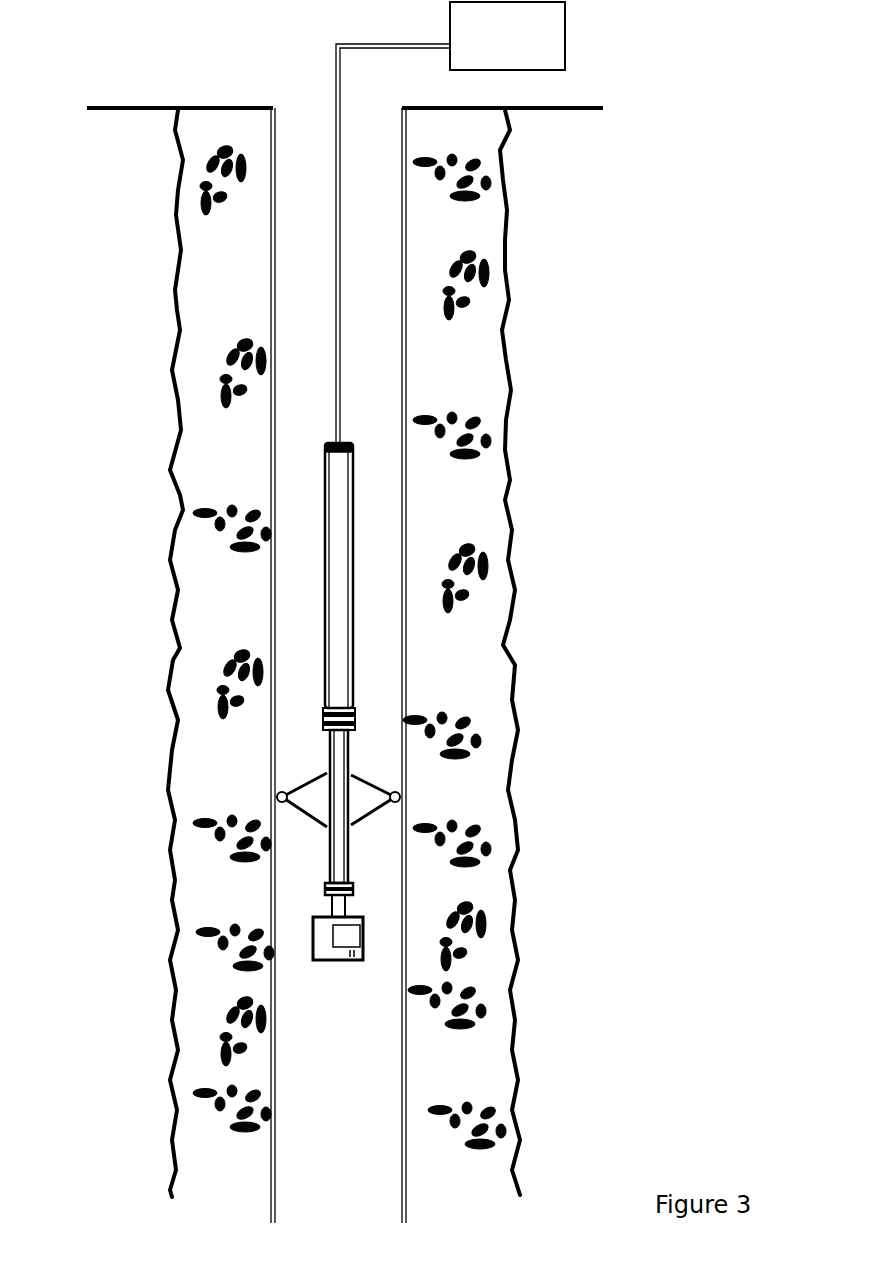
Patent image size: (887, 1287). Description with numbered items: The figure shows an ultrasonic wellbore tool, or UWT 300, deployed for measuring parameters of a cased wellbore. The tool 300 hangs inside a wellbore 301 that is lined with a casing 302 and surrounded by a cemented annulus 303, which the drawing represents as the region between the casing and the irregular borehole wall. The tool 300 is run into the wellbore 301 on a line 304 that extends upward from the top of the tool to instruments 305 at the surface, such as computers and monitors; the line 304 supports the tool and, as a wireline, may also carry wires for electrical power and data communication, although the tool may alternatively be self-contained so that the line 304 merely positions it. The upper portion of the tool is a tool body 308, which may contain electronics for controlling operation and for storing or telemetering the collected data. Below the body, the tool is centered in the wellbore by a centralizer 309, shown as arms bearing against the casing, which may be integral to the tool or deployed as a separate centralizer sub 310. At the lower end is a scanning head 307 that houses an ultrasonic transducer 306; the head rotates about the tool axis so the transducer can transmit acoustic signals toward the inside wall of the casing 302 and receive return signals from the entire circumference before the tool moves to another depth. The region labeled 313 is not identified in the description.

The tool 300 is at (380, 689).
The wellbore 301 is at (272, 82).
The casing 302 is at (405, 565).
The cemented annulus 303 is at (485, 357).
The line 304 is at (340, 127).
The instruments 305 is at (507, 36).
The ultrasonic transducer 306 is at (360, 945).
The scanning head 307 is at (313, 937).
The tool body 308 is at (323, 567).
The centralizer 309 is at (370, 778).
The centralizer sub 310 is at (345, 860).
The borehole fluid 313 is at (367, 253).